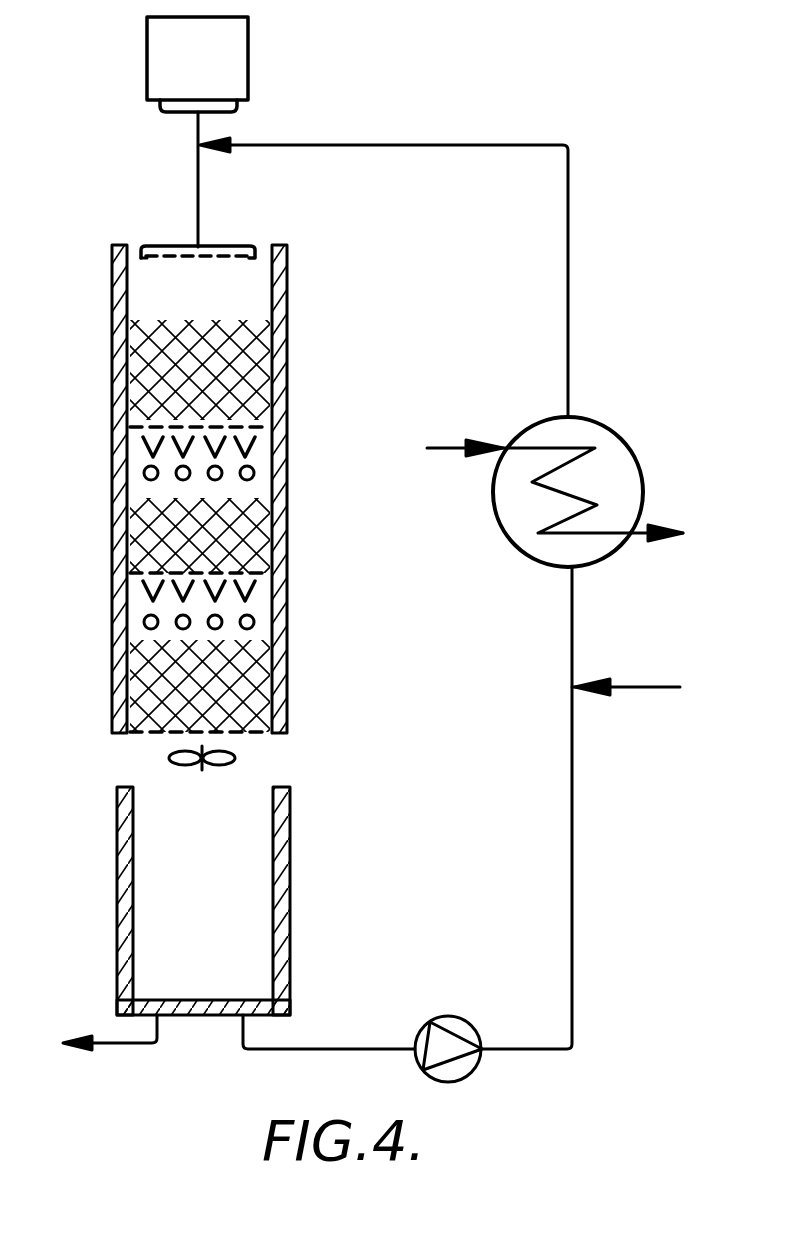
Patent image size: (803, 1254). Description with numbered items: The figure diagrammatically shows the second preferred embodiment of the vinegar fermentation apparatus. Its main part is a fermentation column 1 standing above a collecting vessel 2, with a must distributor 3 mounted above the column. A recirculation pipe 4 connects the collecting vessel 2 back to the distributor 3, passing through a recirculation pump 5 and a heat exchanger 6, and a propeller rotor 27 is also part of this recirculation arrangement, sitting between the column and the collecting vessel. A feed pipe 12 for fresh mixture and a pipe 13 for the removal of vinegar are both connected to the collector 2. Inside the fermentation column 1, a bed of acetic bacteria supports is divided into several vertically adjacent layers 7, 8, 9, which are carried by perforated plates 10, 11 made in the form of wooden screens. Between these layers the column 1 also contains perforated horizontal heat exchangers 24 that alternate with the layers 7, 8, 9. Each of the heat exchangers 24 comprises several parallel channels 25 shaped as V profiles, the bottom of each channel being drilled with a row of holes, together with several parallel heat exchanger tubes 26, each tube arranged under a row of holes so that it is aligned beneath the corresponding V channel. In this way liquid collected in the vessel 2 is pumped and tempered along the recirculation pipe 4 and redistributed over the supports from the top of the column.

The fermentation column 1 is at (288, 279).
The collecting vessel 2 is at (288, 886).
The must distributor 3 is at (208, 245).
The recirculation pipe 4 is at (572, 880).
The recirculation pump 5 is at (448, 1015).
The heat exchanger 6 is at (605, 417).
The layer of supports 7 is at (175, 702).
The layer of supports 8 is at (175, 540).
The layer of supports 9 is at (185, 378).
The perforated plate 10 is at (240, 735).
The perforated plate 11 is at (215, 418).
The feed pipe 12 is at (626, 671).
The pipe for the removal of vinegar 13 is at (108, 1040).
The perforated horizontal heat exchanger 24 is at (233, 458).
The channel 25 is at (145, 448).
The heat exchanger tube 26 is at (143, 473).
The propeller rotor 27 is at (168, 758).